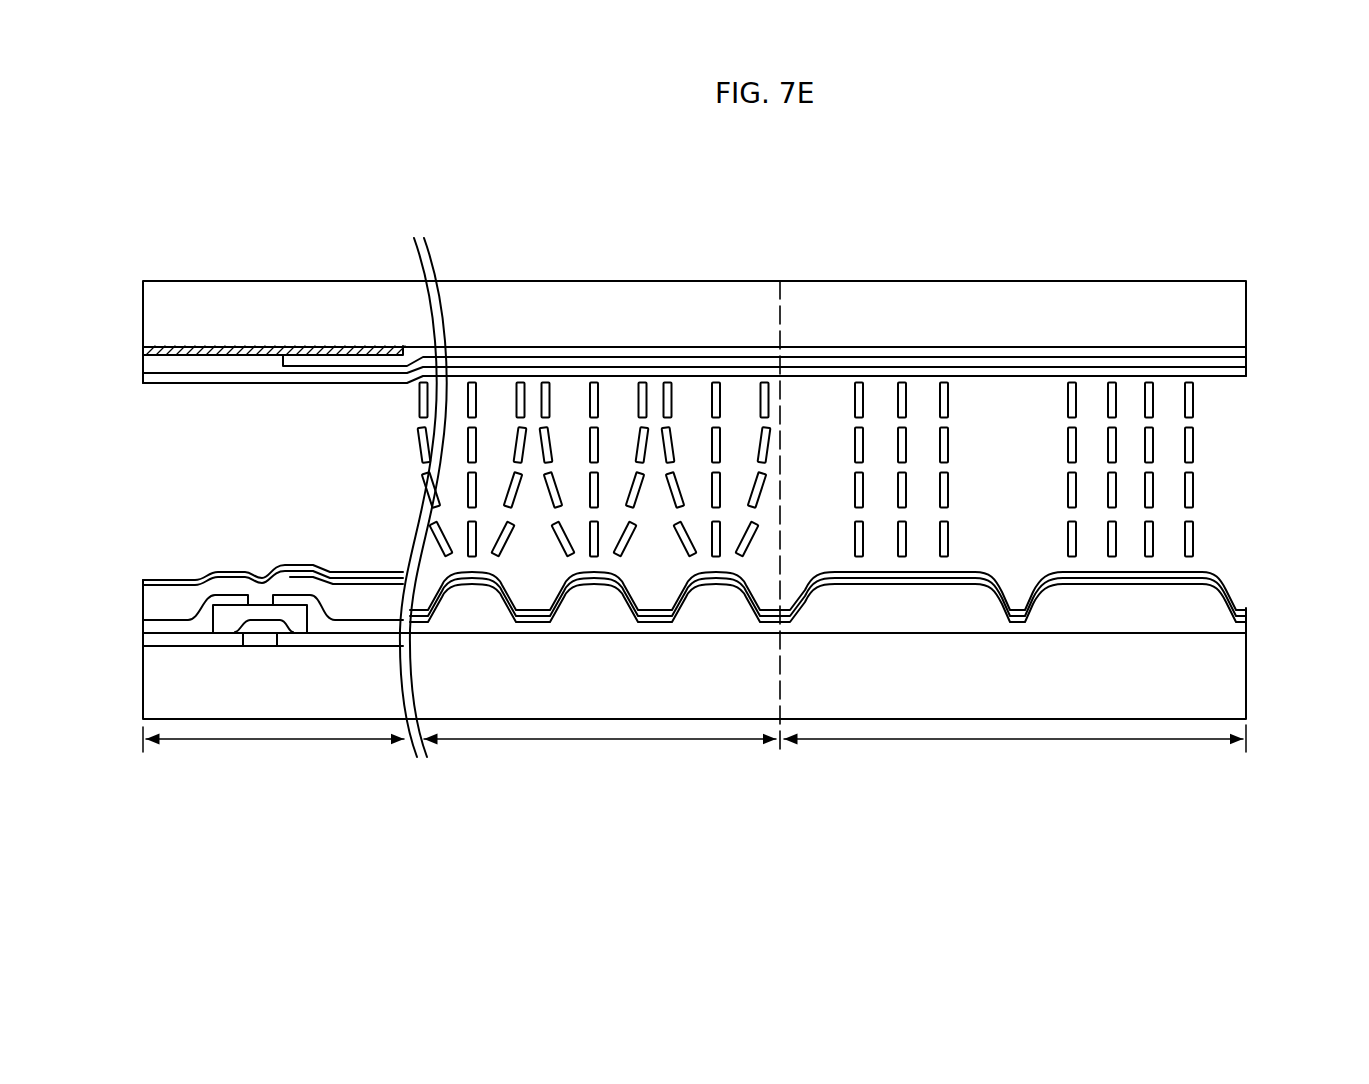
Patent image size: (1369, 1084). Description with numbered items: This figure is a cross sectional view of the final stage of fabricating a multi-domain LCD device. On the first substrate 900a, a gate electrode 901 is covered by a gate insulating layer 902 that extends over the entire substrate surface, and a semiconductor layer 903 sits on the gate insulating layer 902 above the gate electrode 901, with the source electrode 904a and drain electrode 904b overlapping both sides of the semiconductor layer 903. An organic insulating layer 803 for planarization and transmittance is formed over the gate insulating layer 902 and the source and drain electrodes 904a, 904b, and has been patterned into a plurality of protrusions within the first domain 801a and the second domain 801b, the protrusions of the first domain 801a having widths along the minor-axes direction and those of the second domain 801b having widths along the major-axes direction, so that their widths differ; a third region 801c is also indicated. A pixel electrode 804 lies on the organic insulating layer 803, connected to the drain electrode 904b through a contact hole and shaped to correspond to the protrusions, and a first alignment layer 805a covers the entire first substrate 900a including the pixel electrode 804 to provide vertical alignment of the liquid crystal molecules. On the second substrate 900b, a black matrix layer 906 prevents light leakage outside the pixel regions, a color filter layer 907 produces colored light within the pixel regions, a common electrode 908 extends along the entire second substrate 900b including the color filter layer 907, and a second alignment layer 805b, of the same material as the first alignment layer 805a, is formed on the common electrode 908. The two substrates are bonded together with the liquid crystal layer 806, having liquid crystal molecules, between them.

The first substrate 900a is at (1230, 673).
The second substrate 900b is at (1058, 300).
The gate electrode 901 is at (268, 637).
The gate insulating layer 902 is at (152, 641).
The semiconductor layer 903 is at (230, 614).
The source electrode 904a is at (167, 625).
The drain electrode 904b is at (360, 625).
The black matrix layer 906 is at (163, 345).
The color filter layer 907 is at (537, 352).
The common electrode 908 is at (665, 365).
The organic insulating layer 803 is at (172, 595).
The pixel electrode 804 is at (310, 565).
The first alignment layer 805a is at (172, 591).
The second alignment layer 805b is at (1246, 367).
The liquid crystal layer 806 is at (1199, 383).
The first domain 801a is at (600, 759).
The second domain 801b is at (1015, 754).
The pad (third) region 801c is at (273, 753).